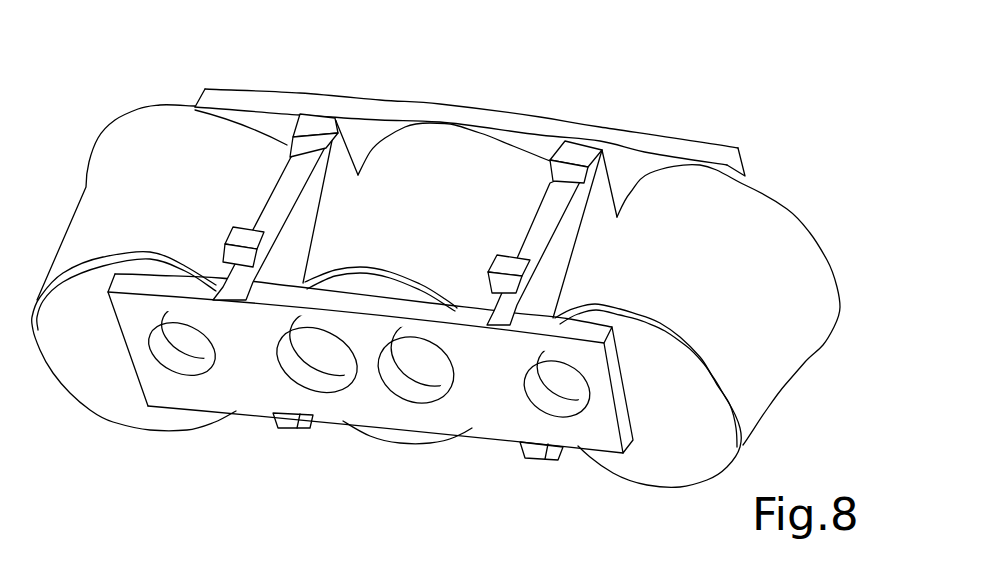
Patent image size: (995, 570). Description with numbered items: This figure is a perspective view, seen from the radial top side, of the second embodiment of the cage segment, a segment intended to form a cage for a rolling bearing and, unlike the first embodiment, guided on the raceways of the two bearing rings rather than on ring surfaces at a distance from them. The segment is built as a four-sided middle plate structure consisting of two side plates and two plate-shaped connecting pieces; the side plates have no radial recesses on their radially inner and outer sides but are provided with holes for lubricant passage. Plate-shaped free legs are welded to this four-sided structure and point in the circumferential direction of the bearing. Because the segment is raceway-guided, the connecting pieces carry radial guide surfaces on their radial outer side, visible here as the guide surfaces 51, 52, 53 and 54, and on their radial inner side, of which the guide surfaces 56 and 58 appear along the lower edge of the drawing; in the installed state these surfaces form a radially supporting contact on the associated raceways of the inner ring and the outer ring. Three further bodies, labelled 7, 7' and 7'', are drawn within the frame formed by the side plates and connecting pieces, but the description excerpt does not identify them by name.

The battery cell 7 is at (430, 282).
The battery cell 7' is at (159, 268).
The battery cell 7'' is at (697, 318).
The radial guide surface 51 is at (308, 128).
The radial guide surface 52 is at (244, 235).
The radial guide surface 53 is at (572, 158).
The radial guide surface 54 is at (503, 268).
The radial guide surface 56 is at (287, 428).
The radial guide surface 58 is at (533, 458).